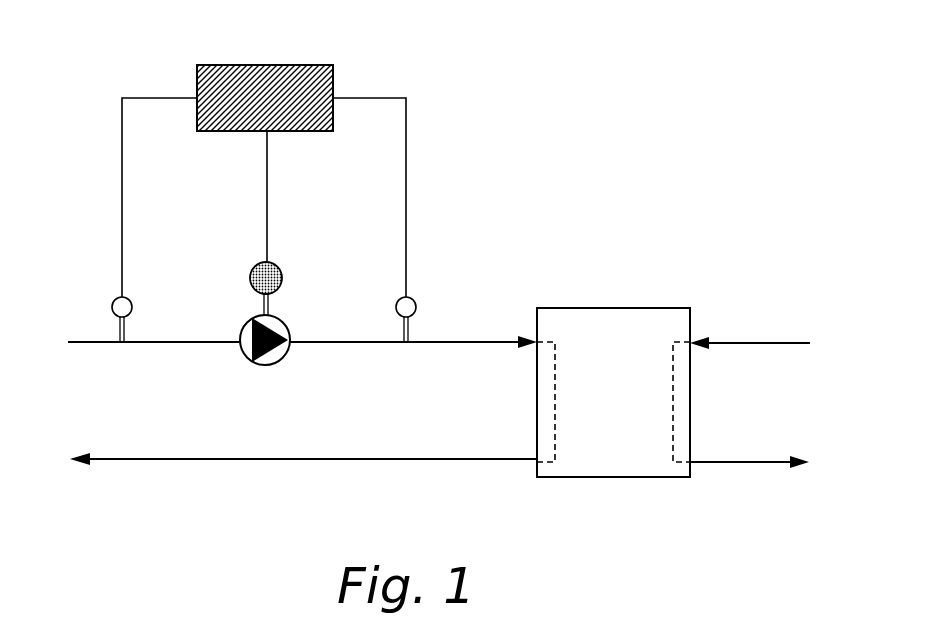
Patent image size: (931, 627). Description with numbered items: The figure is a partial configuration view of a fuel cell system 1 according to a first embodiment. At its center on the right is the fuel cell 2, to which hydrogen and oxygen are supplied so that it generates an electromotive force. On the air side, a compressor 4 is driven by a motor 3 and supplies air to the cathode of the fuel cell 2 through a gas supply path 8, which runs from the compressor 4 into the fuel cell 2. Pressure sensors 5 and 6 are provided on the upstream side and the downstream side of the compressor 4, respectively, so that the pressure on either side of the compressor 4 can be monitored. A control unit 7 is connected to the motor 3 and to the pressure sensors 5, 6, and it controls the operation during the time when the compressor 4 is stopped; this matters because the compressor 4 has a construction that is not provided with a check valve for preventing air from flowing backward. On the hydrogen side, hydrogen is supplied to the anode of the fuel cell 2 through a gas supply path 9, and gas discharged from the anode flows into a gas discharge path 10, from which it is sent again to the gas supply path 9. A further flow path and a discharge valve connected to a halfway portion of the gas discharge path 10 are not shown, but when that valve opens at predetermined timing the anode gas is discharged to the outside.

The fuel cell system 1 is at (383, 537).
The fuel cell 2 is at (614, 462).
The motor 3 is at (283, 271).
The compressor 4 is at (275, 364).
The pressure sensor 5 is at (111, 306).
The pressure sensor 6 is at (417, 306).
The control unit 7 is at (243, 77).
The gas supply path 8 is at (355, 344).
The gas supply path 9 is at (760, 340).
The gas discharge path 10 is at (750, 464).